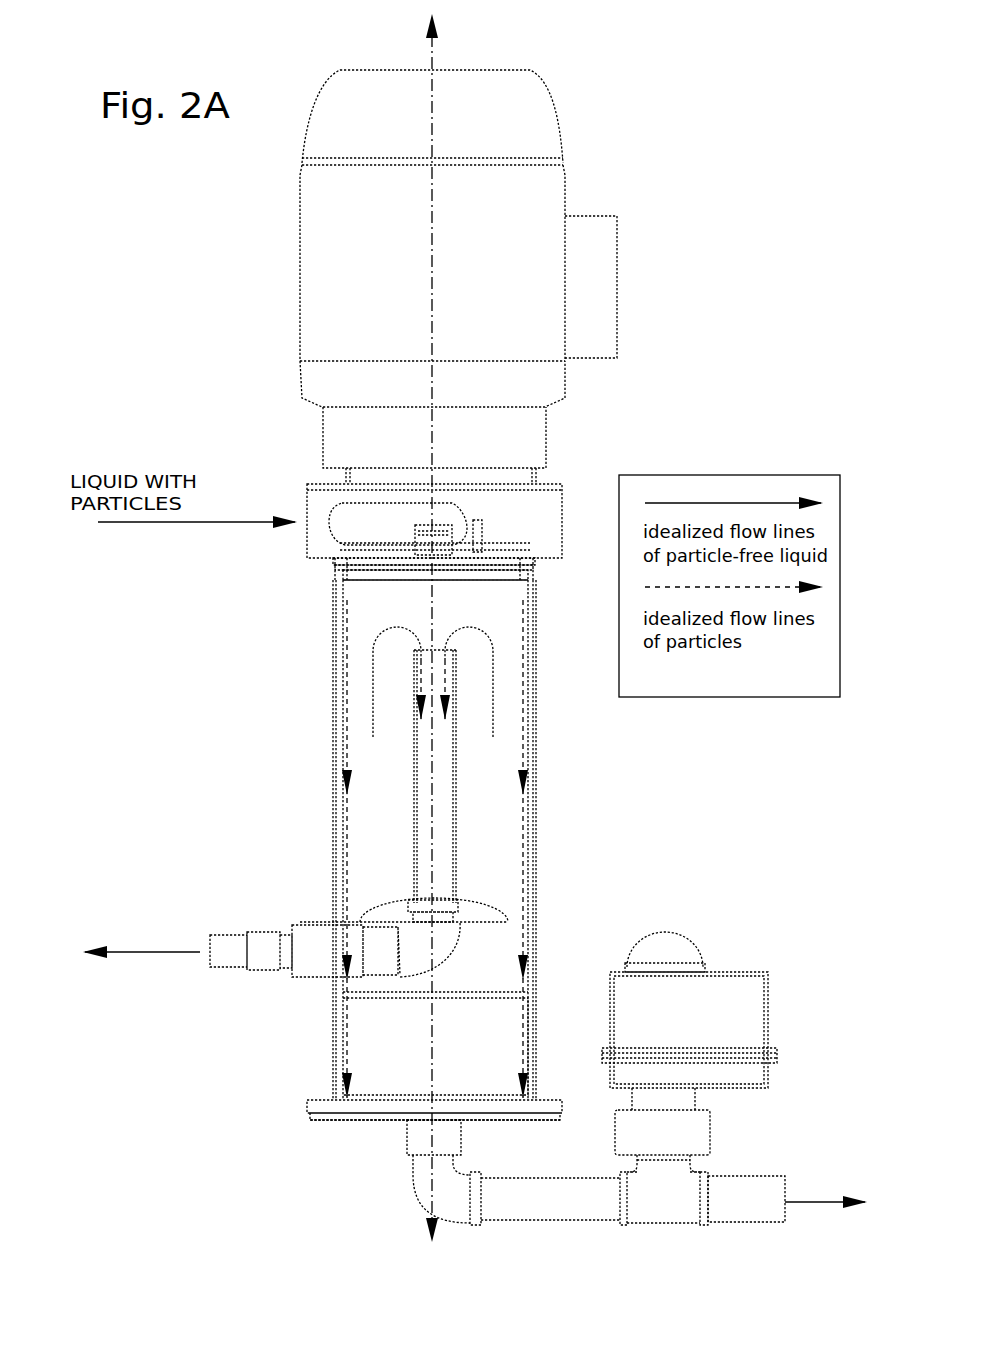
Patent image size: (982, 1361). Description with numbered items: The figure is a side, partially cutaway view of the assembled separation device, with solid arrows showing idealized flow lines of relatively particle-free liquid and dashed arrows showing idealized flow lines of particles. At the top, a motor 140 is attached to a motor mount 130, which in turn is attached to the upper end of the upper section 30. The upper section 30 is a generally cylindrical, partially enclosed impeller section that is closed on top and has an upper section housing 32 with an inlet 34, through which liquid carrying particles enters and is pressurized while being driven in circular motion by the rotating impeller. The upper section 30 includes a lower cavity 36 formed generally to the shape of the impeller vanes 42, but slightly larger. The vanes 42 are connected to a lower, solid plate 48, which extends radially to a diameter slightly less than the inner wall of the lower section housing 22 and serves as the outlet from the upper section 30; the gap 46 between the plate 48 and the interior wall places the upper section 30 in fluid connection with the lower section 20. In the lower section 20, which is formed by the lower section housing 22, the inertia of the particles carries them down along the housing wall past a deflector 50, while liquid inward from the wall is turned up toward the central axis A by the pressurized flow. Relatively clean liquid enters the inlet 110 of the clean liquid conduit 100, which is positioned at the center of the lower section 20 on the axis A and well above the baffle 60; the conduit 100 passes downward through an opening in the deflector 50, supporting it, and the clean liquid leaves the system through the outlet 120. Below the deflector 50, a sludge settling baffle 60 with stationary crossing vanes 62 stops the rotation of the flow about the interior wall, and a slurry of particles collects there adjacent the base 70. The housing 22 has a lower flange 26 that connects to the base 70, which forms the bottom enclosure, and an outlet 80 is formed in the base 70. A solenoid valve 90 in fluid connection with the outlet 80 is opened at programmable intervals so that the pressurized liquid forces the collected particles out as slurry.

The axis A is at (445, 52).
The motor 140 is at (290, 268).
The motor mount 130 is at (305, 483).
The inlet 34 is at (328, 514).
The upper section housing 32 is at (562, 505).
The lower cavity 36 is at (520, 553).
The upper section 30 is at (280, 545).
The gap 46 is at (340, 580).
The vanes 42 is at (490, 578).
The lower plate 48 is at (456, 849).
The inlet of clean liquid conduit 110 is at (432, 650).
The lower section housing 22 is at (330, 742).
The lower section 20 is at (540, 790).
The clean liquid conduit 100 is at (453, 832).
The deflector 50 is at (487, 910).
The outlet of liquid conduit 120 is at (218, 933).
The crossing vanes 62 is at (508, 1050).
The baffle 60 is at (335, 1035).
The base 70 is at (307, 1103).
The lower flange 26 is at (308, 1120).
The outlet 80 is at (403, 1152).
The solenoid valve 90 is at (717, 955).